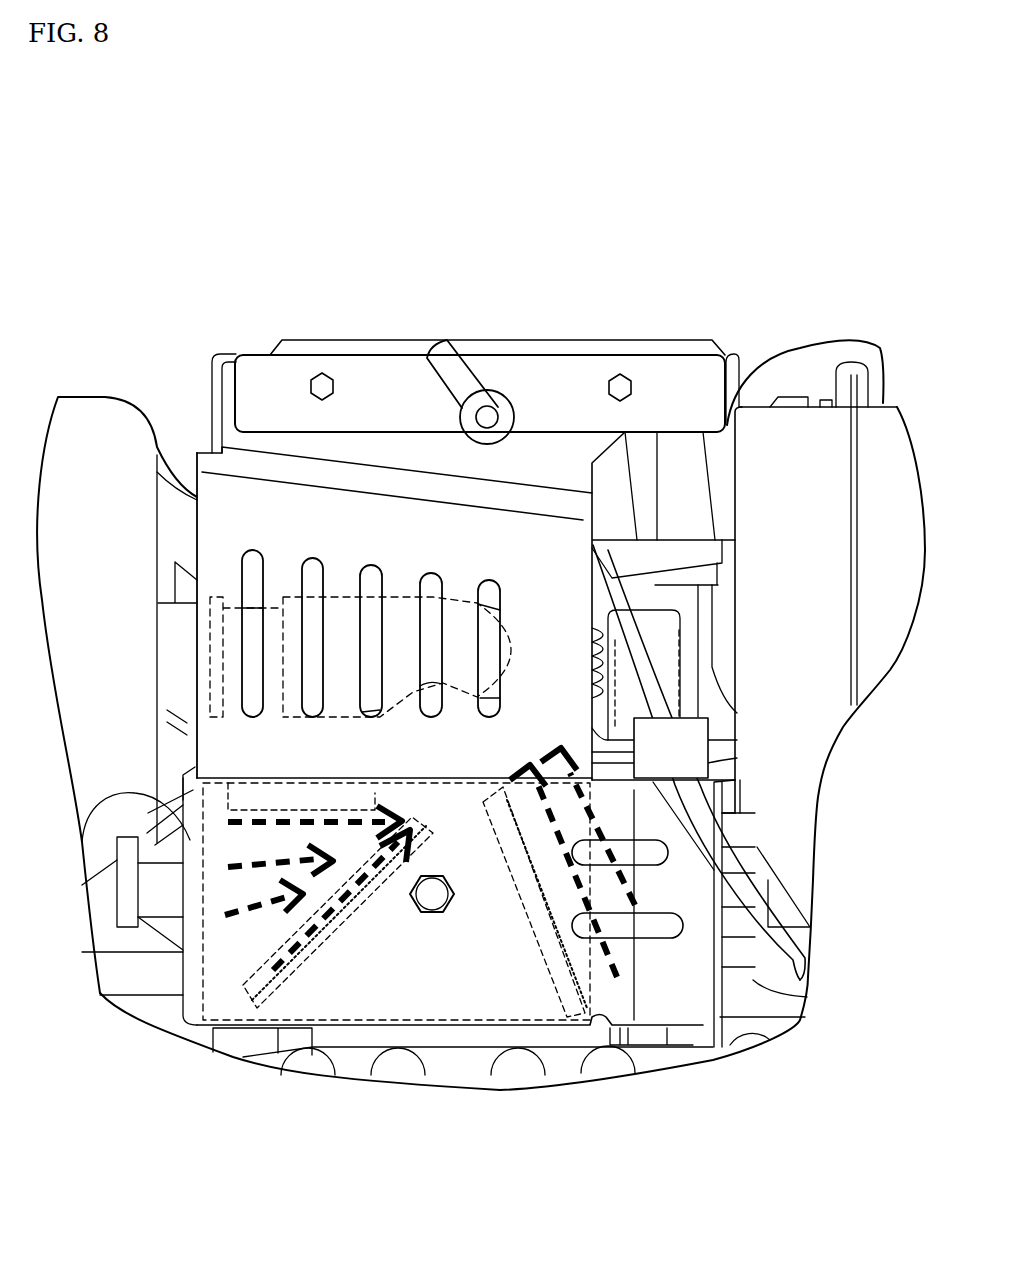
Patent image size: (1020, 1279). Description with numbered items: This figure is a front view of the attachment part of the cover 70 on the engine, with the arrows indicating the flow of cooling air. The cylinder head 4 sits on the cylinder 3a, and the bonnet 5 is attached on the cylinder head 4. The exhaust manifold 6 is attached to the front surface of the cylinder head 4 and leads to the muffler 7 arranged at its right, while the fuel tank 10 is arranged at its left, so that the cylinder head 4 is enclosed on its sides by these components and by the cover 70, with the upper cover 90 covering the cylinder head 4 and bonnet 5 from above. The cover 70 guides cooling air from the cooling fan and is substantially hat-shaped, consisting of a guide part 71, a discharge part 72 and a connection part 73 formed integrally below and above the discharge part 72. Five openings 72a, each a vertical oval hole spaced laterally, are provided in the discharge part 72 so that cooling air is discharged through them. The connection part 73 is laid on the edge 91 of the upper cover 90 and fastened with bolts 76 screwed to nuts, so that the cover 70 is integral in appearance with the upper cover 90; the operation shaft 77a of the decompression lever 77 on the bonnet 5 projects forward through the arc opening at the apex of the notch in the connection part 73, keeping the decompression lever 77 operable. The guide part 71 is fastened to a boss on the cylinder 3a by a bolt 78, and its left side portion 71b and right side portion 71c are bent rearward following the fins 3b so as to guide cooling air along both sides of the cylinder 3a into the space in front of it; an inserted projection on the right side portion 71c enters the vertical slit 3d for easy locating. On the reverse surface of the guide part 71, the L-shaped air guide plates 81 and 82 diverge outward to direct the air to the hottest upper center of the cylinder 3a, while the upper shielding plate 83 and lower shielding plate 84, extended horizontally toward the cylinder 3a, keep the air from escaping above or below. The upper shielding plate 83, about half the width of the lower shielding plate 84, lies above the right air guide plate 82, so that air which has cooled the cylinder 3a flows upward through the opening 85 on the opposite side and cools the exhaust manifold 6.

The cylinder 3a is at (357, 1040).
The fins 3b is at (762, 985).
The vertical slit 3d is at (192, 968).
The cylinder head 4 is at (712, 607).
The bonnet 5 is at (705, 474).
The exhaust manifold 6 is at (405, 597).
The muffler 7 is at (92, 396).
The fuel tank 10 is at (800, 400).
The cover 70 is at (183, 541).
The guide part 71 is at (627, 1047).
The left side portion 71b is at (705, 853).
The right side portion 71c is at (192, 845).
The discharge part 72 is at (195, 744).
The openings 72a is at (312, 560).
The connection part 73 is at (593, 473).
The bolts 76 is at (320, 372).
The decompression lever 77 is at (445, 340).
The operation shaft 77a is at (490, 404).
The bolt 78 is at (436, 914).
The air guide plate 81 is at (312, 960).
The air guide plate 82 is at (523, 897).
The upper shielding plate 83 is at (375, 796).
The lower shielding plate 84 is at (377, 1020).
The opening 85 is at (453, 778).
The upper cover 90 is at (598, 340).
The edge 91 is at (213, 388).